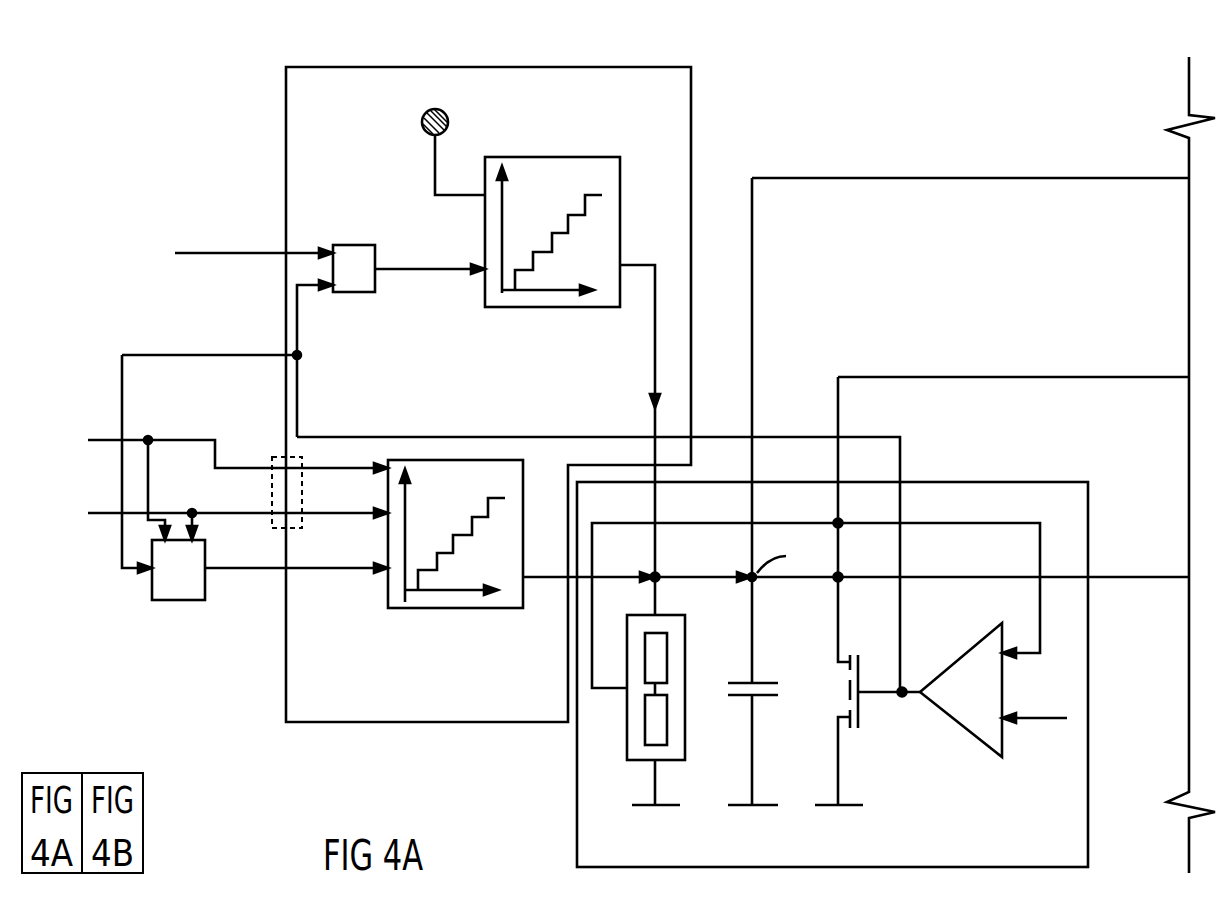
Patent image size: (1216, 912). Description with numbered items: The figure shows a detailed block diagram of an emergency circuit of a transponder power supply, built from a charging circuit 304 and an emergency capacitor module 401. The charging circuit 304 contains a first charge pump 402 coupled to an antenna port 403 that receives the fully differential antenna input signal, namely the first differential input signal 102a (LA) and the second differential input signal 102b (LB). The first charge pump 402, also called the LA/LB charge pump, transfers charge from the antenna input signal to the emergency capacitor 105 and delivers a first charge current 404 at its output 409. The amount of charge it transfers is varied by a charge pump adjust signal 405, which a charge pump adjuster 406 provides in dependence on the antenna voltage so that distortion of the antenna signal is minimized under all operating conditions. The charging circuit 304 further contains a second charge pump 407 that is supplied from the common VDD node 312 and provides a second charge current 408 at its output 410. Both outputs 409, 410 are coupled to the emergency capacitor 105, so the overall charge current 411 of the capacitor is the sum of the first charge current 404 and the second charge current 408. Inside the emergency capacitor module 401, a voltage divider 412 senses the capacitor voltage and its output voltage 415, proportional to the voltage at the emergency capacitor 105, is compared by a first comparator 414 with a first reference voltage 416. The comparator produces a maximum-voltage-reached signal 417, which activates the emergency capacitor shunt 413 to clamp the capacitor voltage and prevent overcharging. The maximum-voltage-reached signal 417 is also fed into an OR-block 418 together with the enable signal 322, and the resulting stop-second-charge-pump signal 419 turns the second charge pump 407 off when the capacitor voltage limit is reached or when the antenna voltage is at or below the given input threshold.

The charging circuit 304 is at (415, 722).
The common VDD node 312 is at (450, 122).
The second charge pump 407 is at (602, 157).
The output of the second charge pump 410 is at (640, 262).
The second charge current 408 is at (650, 380).
The OR-block 418 is at (355, 292).
The enable signal 322 is at (242, 256).
The stop-second-charge-pump signal 419 is at (438, 272).
The first differential input signal 102a is at (257, 465).
The second differential input signal 102b is at (213, 511).
The antenna port 403 is at (302, 492).
The charge pump adjust signal 405 is at (318, 570).
The charge pump adjuster 406 is at (175, 600).
The first charge pump 402 is at (388, 602).
The output of the first charge pump 409 is at (527, 571).
The first charge current 404 is at (637, 575).
The overall charge current 411 is at (684, 572).
The maximum-voltage-reached signal 417 is at (902, 448).
The output voltage of the voltage divider 415 is at (603, 690).
The voltage divider 412 is at (685, 717).
The emergency capacitor 105 is at (752, 708).
The emergency capacitor shunt 413 is at (858, 715).
The first comparator 414 is at (1003, 738).
The first reference voltage 416 is at (1043, 718).
The emergency capacitor module 401 is at (577, 773).